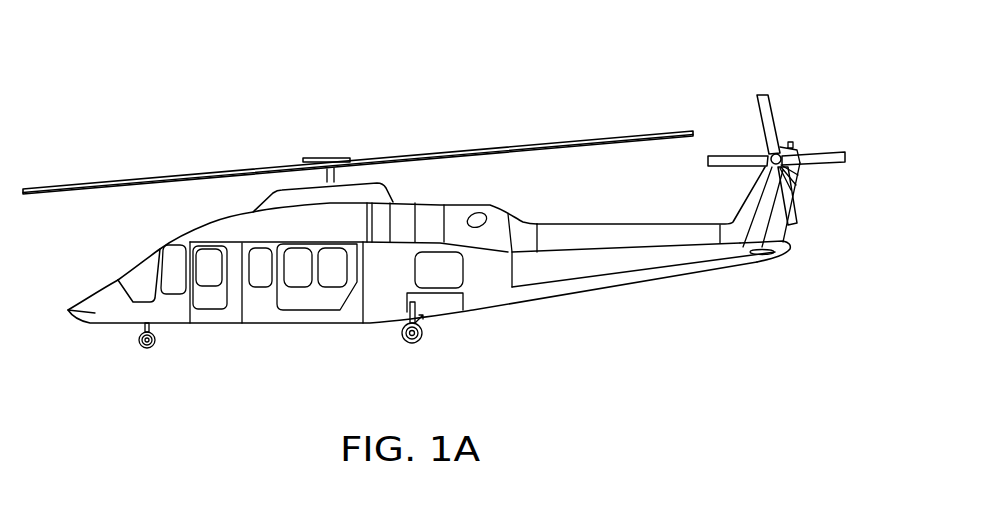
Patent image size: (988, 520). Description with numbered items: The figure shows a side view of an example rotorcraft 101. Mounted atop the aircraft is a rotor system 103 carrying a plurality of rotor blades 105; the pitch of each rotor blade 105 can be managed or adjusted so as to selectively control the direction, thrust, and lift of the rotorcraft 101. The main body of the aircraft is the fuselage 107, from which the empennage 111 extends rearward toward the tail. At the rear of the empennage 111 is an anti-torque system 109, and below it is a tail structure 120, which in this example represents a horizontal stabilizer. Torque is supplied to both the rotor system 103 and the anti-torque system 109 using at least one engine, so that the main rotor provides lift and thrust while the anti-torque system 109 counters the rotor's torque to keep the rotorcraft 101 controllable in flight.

The rotorcraft 101 is at (175, 54).
The rotor system 103 is at (343, 137).
The rotor blade 105 is at (163, 175).
The fuselage 107 is at (262, 324).
The anti-torque system 109 is at (798, 131).
The empennage 111 is at (647, 283).
The tail structure 120 is at (762, 257).